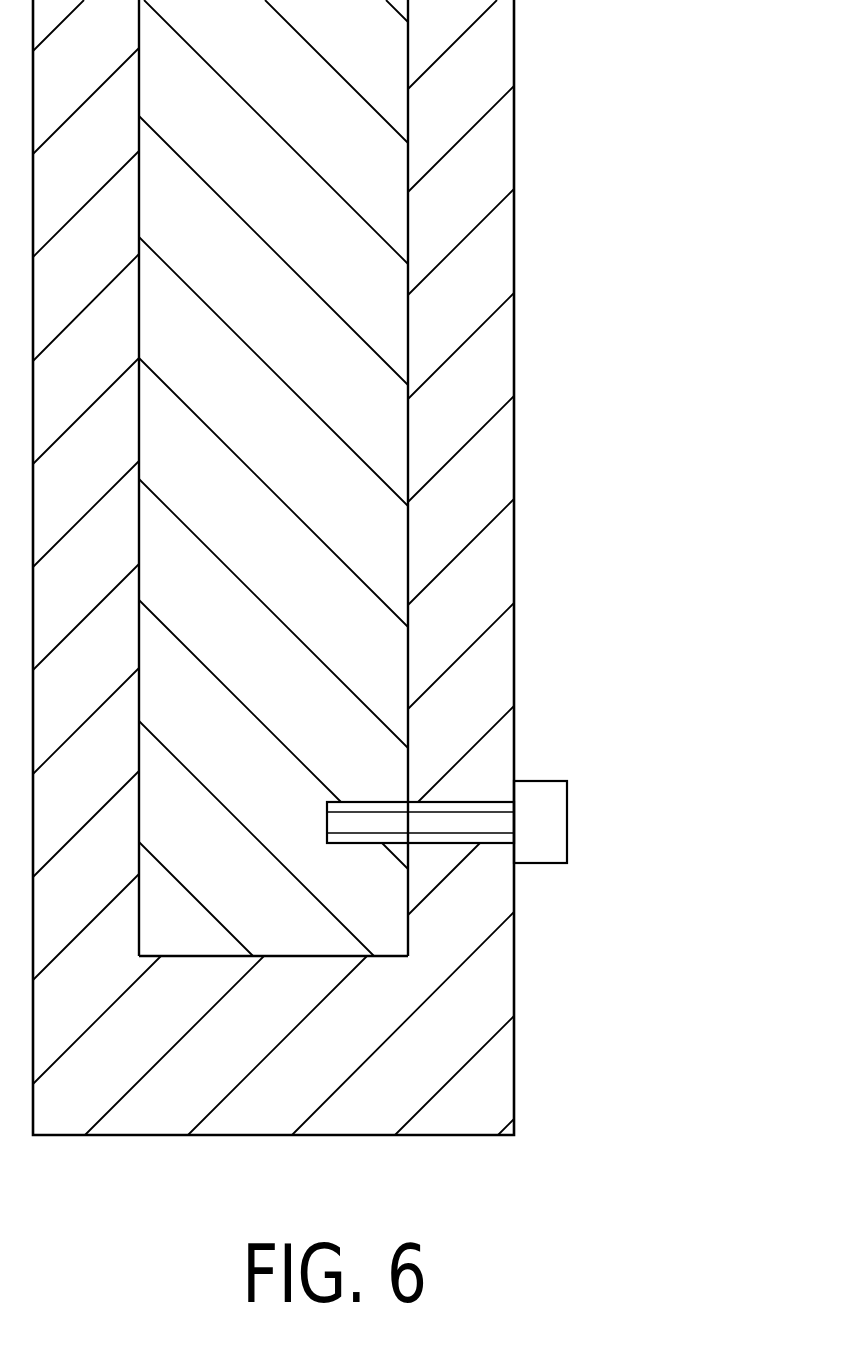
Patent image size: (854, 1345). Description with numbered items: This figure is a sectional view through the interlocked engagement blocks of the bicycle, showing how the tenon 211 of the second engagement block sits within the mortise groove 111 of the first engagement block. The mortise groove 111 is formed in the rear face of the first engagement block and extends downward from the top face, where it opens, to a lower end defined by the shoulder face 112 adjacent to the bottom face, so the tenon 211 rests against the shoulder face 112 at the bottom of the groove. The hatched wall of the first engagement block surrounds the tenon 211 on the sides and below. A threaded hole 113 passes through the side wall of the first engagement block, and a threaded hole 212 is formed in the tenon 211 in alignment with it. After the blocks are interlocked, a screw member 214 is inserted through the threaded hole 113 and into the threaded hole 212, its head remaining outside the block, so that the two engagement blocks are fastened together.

The mortise groove 111 is at (408, 440).
The shoulder face 112 is at (335, 955).
The threaded hole 113 is at (467, 800).
The tenon 211 is at (335, 707).
The threaded hole 212 is at (362, 843).
The screw member 214 is at (547, 833).